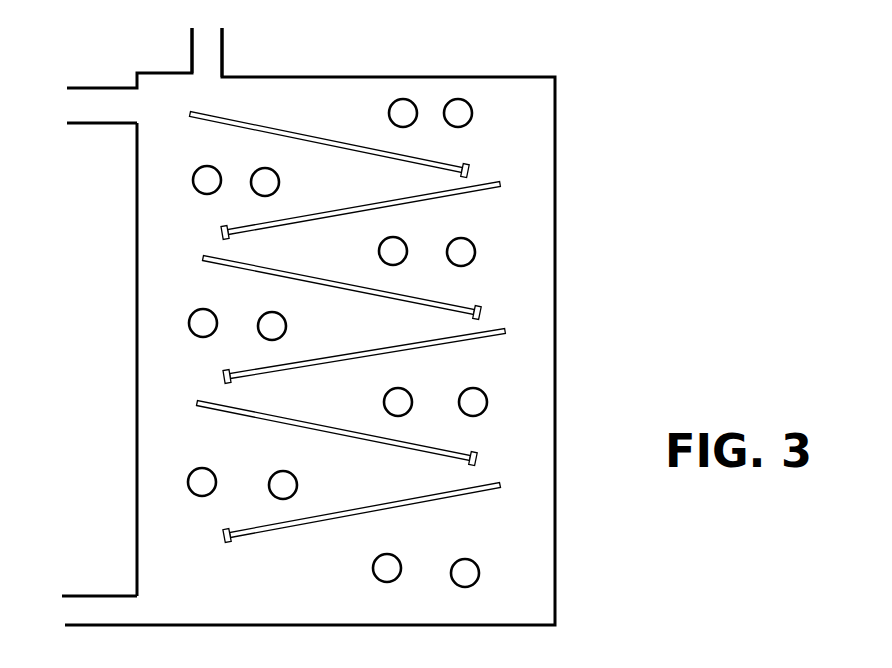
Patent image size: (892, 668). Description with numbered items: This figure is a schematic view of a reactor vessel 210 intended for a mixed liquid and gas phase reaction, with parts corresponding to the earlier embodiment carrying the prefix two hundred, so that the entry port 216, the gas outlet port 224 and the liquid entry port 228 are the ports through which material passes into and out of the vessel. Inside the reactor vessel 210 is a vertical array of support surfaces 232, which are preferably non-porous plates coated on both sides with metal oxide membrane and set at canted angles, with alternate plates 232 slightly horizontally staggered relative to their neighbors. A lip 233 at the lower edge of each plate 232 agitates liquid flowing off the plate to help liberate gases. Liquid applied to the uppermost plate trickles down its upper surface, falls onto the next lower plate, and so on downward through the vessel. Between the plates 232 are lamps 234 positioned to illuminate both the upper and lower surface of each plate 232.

The reactor vessel 210 is at (131, 399).
The inlet 216 is at (100, 85).
The upper port 224 is at (190, 50).
The outlet 228 is at (90, 590).
The support surfaces 232 is at (413, 295).
The lip 233 is at (475, 169).
The lamps 234 is at (260, 310).